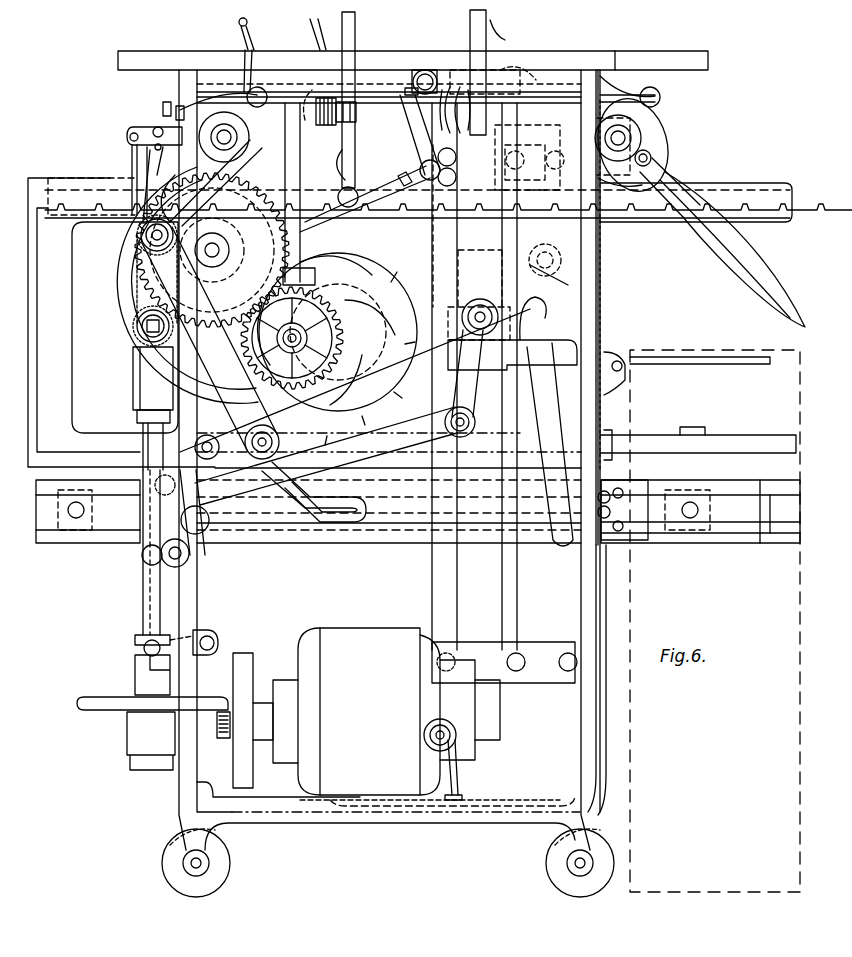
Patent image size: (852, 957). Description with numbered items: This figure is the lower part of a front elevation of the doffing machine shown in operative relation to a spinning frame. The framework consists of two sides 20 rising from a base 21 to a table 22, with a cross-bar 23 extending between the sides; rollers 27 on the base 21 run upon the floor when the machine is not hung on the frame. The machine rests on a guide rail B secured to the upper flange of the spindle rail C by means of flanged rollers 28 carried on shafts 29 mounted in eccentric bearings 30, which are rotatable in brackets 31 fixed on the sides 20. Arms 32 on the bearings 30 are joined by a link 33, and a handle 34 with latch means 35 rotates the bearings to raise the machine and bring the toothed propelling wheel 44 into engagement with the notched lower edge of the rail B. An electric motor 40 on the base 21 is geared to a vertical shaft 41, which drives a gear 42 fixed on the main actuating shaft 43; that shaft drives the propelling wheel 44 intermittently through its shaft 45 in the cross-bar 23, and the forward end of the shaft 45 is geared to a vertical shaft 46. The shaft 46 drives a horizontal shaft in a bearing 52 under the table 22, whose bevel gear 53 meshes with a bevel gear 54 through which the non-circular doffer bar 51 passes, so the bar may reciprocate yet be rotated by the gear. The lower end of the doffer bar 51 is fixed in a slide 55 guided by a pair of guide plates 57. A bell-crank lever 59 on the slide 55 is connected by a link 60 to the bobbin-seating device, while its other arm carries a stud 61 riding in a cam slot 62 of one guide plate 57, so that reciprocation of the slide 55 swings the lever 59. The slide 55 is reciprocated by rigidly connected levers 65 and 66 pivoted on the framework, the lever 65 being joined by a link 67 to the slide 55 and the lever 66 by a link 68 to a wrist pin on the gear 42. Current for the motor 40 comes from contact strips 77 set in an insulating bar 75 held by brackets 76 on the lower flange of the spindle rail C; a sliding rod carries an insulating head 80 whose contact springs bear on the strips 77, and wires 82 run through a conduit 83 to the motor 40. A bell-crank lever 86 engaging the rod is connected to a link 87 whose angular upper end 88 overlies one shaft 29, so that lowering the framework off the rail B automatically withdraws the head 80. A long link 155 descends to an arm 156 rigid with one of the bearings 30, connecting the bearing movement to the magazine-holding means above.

The sides 20 is at (600, 282).
The base 21 is at (458, 825).
The table 22 is at (404, 62).
The cross-bar 23 is at (418, 318).
The rollers 27 is at (210, 878).
The flanged rollers 28 is at (668, 150).
The shafts 29 is at (650, 132).
The eccentric bearings 30 is at (205, 120).
The brackets 31 is at (200, 155).
The arms 32 is at (230, 93).
The link 33 is at (568, 64).
The handle 34 is at (748, 292).
The latch means 35 is at (735, 262).
The electric motor 40 is at (385, 730).
The vertical shaft 41 is at (143, 597).
The gear 42 is at (150, 285).
The main actuating shaft 43 is at (150, 240).
The toothed propelling wheel 44 is at (366, 262).
The shaft 45 is at (334, 376).
The vertical shaft 46 is at (292, 140).
The doffer bar 51 is at (490, 38).
The bearing 52 is at (395, 130).
The bevel gear 53 is at (470, 118).
The bevel gear 54 is at (530, 75).
The slide 55 is at (486, 305).
The guide plates 57 is at (505, 578).
The bell-crank lever 59 is at (440, 256).
The link 60 is at (348, 48).
The stud 61 is at (545, 300).
The cam slot 62 is at (548, 402).
The lever 65 is at (390, 470).
The lever 66 is at (225, 520).
The link 67 is at (478, 398).
The link 68 is at (215, 348).
The bar of insulating material 75 is at (112, 538).
The brackets 76 is at (58, 530).
The contact strips 77 is at (760, 500).
The head 80 is at (636, 530).
The wires 82 is at (462, 785).
The conduit 83 is at (606, 698).
The bell-crank lever 86 is at (610, 460).
The link 87 is at (600, 262).
The angular upper end 88 is at (580, 112).
The long link 155 is at (260, 75).
The arm 156 is at (150, 180).
The guide rail B is at (722, 192).
The spindle rail C is at (57, 348).